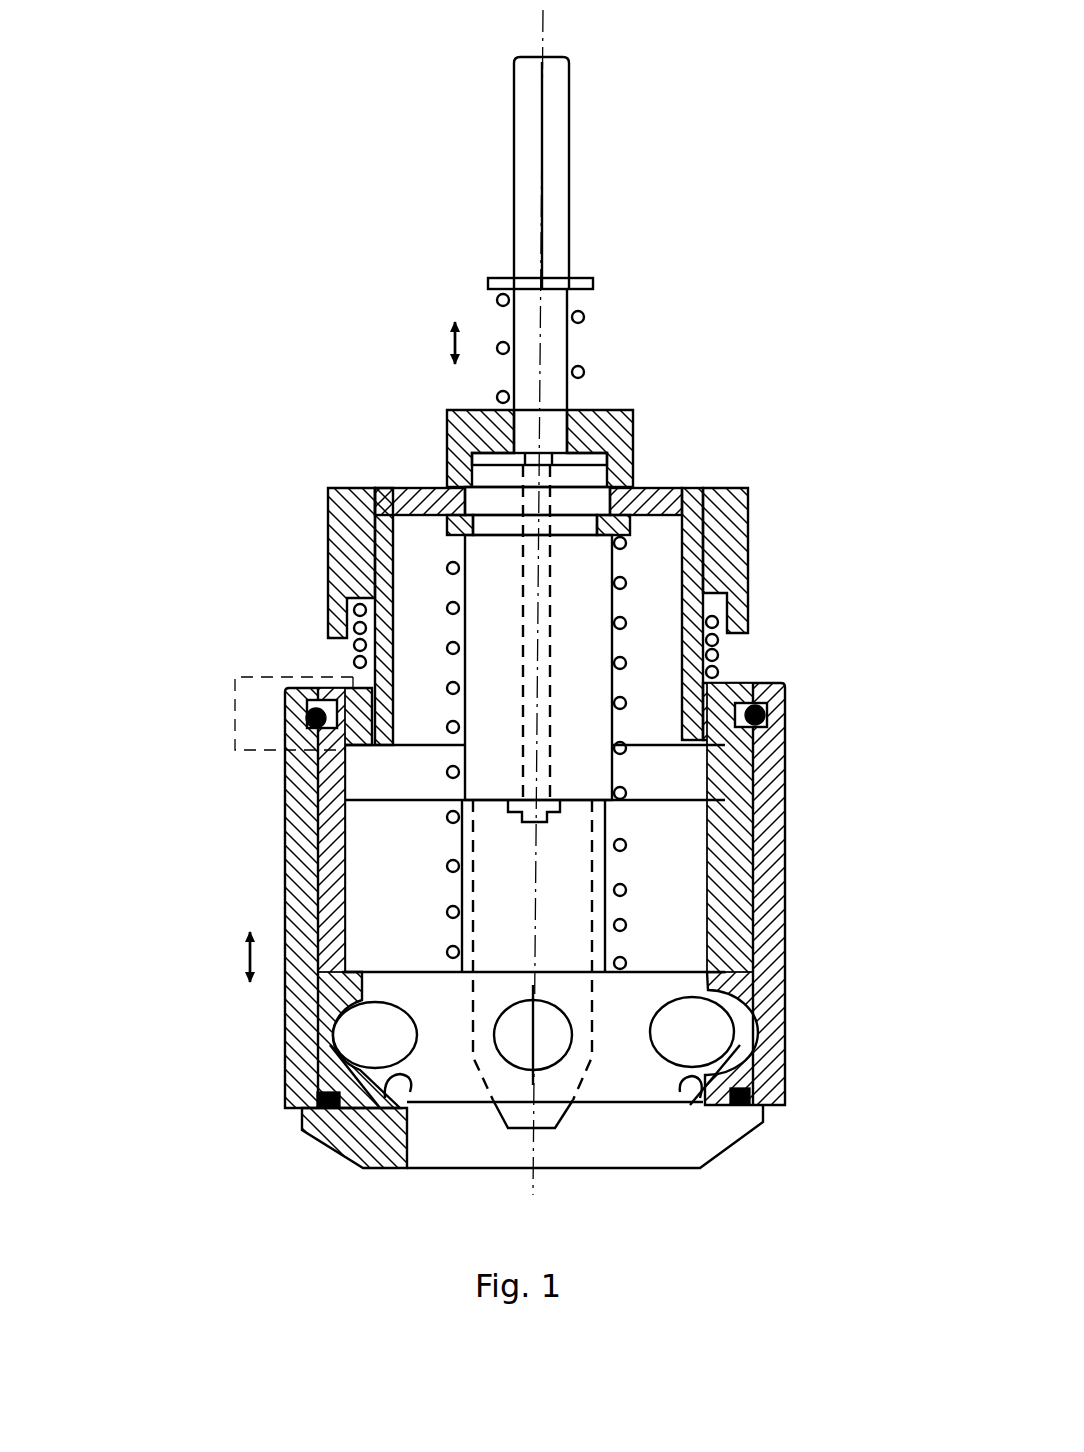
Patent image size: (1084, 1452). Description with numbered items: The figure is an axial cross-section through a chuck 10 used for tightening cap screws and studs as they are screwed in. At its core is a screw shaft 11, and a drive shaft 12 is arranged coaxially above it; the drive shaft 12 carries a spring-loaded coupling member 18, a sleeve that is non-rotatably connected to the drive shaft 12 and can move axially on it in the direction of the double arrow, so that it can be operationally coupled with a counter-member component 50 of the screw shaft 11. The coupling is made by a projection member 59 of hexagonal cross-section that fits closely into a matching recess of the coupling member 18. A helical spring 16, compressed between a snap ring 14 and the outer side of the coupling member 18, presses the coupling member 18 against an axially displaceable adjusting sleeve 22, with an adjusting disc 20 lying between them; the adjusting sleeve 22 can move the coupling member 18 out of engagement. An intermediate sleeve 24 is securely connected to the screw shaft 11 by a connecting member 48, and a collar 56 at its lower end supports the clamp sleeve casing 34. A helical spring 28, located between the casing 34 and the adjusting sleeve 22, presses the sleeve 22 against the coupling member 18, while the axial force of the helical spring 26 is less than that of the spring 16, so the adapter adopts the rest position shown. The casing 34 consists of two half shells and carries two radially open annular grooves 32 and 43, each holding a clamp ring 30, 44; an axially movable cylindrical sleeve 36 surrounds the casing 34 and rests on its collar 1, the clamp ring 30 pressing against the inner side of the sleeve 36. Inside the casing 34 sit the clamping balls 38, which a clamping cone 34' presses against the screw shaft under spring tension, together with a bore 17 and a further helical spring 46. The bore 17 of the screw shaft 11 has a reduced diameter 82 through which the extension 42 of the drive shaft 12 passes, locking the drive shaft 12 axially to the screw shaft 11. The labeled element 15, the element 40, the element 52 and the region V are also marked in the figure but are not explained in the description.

The collar 1 is at (322, 1123).
The chuck 10 is at (388, 312).
The screw shaft 11 is at (536, 633).
The drive shaft 12 is at (556, 120).
The snap ring 14 is at (594, 284).
The rod section 15 is at (556, 340).
The helical spring 16 is at (585, 316).
The bore 17 is at (553, 897).
The coupling member 18 is at (632, 412).
The adjusting disc 20 is at (708, 490).
The adjusting sleeve 22 is at (718, 494).
The intermediate sleeve 24 is at (696, 558).
The helical spring 26 is at (722, 652).
The helical spring 28 is at (724, 656).
The clamp ring 30 is at (762, 717).
The annular groove 32 is at (315, 718).
The clamp sleeve casing 34 is at (634, 858).
The clamping cone 34' is at (305, 1215).
The cylindrical sleeve 36 is at (776, 886).
The clamping balls 38 is at (710, 1043).
The nozzle 40 is at (553, 1085).
The extension 42 is at (502, 824).
The annular groove 43 is at (313, 1090).
The clamp ring 44 is at (786, 1093).
The helical spring 46 is at (617, 923).
The connecting member 48 is at (470, 521).
The counter-member component 50 is at (490, 466).
The seal 52 is at (305, 1108).
The collar 56 is at (700, 752).
The projection member 59 is at (602, 461).
The reduced diameter 82 is at (516, 572).
The volume V is at (232, 752).